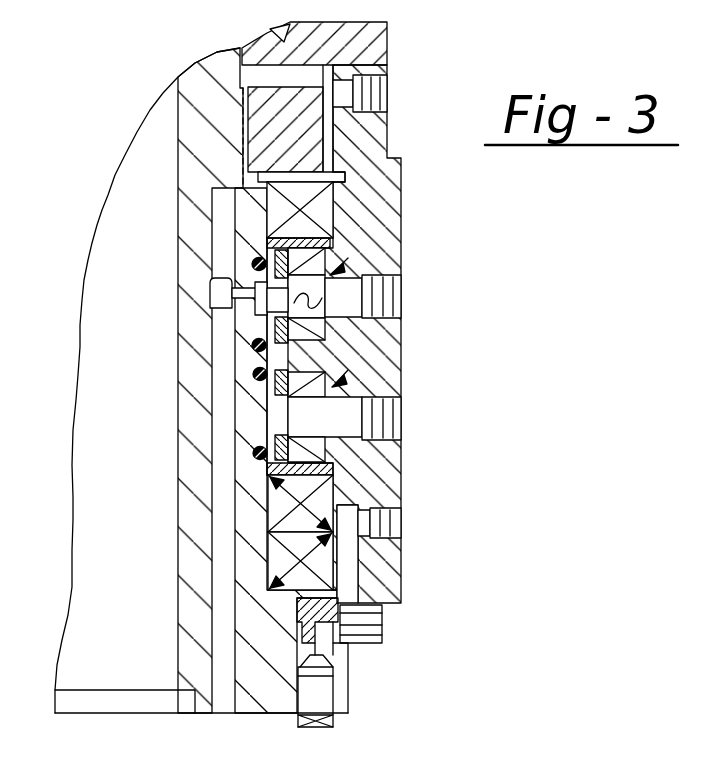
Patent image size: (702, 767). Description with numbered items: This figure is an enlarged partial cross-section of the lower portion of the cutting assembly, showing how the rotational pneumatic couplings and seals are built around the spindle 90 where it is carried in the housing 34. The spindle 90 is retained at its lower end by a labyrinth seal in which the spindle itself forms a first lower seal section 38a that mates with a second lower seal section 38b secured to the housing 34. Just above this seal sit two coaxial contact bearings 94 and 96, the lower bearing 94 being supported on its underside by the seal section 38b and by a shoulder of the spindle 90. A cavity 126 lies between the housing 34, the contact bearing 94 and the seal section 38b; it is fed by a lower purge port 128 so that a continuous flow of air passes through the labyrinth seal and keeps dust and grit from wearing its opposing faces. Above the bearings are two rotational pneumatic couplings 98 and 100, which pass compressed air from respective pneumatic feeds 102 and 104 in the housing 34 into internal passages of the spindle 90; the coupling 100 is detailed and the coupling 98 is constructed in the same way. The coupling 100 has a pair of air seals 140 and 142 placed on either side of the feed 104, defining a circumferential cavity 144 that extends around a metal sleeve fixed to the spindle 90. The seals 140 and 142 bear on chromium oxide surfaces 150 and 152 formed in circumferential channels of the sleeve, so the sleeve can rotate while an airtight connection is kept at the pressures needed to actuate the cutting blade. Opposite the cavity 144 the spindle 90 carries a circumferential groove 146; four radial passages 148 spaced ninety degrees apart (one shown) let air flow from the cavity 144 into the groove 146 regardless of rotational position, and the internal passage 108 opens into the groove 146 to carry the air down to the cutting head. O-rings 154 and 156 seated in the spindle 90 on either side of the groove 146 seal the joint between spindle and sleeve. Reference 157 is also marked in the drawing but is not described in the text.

The housing 34 is at (401, 205).
The first lower seal section 38a is at (334, 655).
The second lower seal section 38b is at (383, 619).
The spindle 90 is at (185, 172).
The contact bearing 94 is at (268, 560).
The contact bearing 96 is at (268, 505).
The rotational pneumatic coupling 98 is at (401, 388).
The rotational pneumatic coupling 100 is at (401, 238).
The pneumatic feed 102 is at (401, 413).
The pneumatic feed 104 is at (401, 291).
The internal passage 108 is at (216, 476).
The cavity 126 is at (403, 546).
The lower purge port 128 is at (401, 518).
The air seal 140 is at (401, 368).
The air seal 142 is at (401, 221).
The circumferential cavity 144 is at (401, 340).
The circumferential groove 146 is at (255, 294).
The radial passage 148 is at (253, 346).
The chromium oxide surface 150 is at (254, 375).
The chromium oxide surface 152 is at (254, 262).
The O-ring 154 is at (275, 390).
The O-ring 156 is at (233, 287).
The seal 157 is at (254, 453).